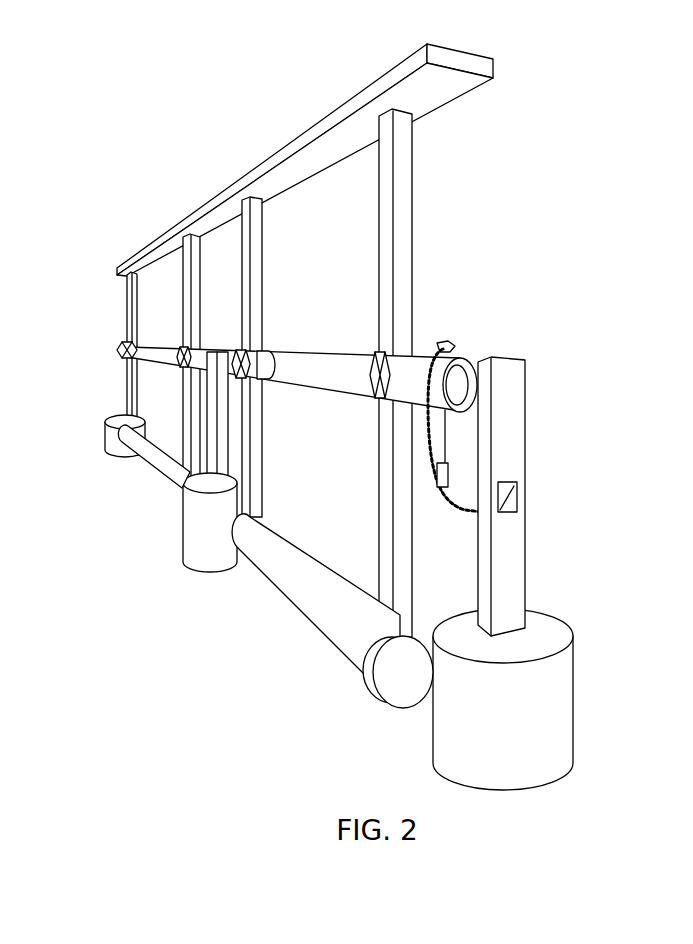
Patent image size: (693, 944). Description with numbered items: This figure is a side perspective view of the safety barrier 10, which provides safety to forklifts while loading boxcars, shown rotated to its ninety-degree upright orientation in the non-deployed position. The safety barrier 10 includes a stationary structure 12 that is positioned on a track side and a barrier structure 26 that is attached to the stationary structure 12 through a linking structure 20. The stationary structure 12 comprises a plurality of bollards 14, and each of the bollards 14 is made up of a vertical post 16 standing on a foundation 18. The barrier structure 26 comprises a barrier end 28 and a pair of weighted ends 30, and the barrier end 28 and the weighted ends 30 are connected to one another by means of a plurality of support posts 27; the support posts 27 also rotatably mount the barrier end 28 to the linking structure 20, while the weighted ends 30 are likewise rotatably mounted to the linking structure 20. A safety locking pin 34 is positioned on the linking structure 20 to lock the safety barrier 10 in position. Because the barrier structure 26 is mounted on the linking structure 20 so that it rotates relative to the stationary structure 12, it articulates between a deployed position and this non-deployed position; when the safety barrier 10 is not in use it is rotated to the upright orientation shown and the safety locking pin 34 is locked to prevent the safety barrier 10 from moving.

The safety barrier 10 is at (180, 120).
The stationary structure 12 is at (566, 605).
The bollards 14 is at (183, 530).
The vertical post 16 is at (508, 457).
The foundation 18 is at (555, 700).
The linking structure 20 is at (305, 352).
The barrier structure 26 is at (355, 79).
The support posts 27 is at (135, 297).
The barrier end 28 is at (173, 230).
The weighted ends 30 is at (160, 462).
The safety locking pin 34 is at (452, 352).